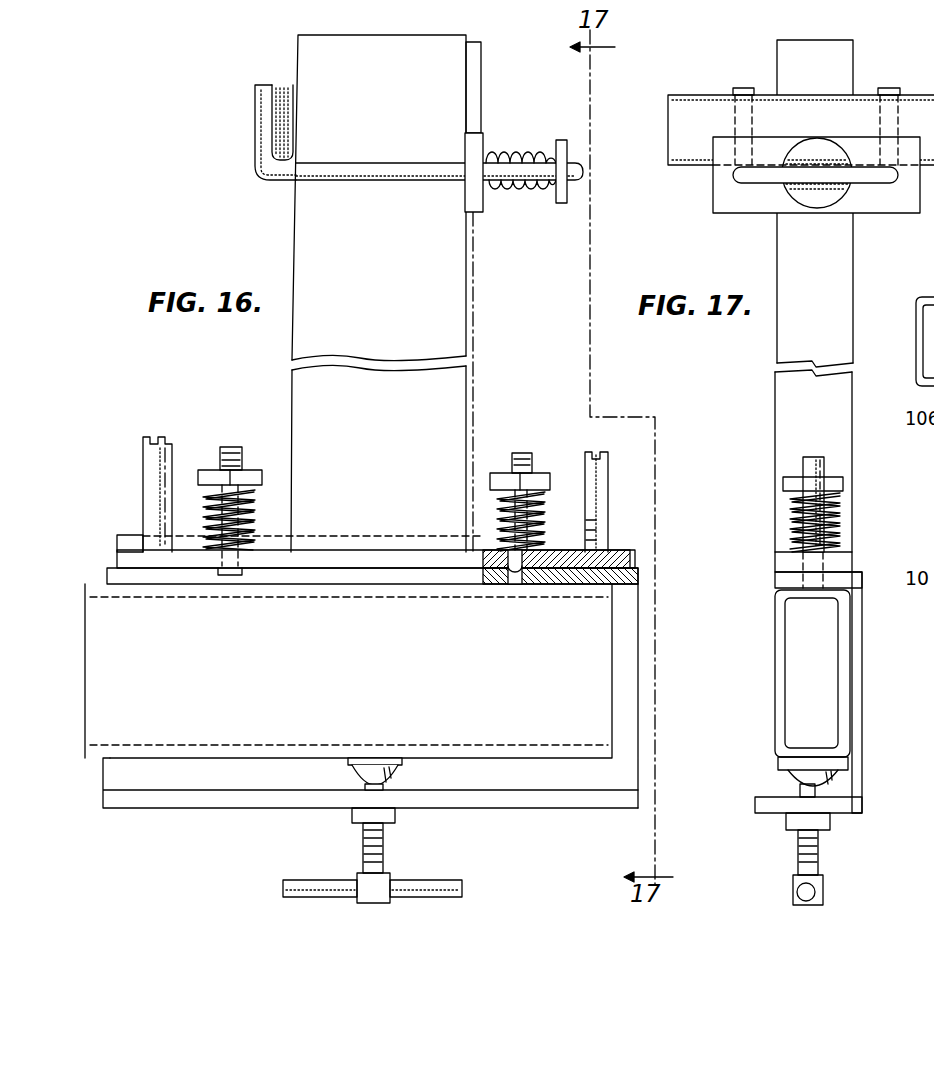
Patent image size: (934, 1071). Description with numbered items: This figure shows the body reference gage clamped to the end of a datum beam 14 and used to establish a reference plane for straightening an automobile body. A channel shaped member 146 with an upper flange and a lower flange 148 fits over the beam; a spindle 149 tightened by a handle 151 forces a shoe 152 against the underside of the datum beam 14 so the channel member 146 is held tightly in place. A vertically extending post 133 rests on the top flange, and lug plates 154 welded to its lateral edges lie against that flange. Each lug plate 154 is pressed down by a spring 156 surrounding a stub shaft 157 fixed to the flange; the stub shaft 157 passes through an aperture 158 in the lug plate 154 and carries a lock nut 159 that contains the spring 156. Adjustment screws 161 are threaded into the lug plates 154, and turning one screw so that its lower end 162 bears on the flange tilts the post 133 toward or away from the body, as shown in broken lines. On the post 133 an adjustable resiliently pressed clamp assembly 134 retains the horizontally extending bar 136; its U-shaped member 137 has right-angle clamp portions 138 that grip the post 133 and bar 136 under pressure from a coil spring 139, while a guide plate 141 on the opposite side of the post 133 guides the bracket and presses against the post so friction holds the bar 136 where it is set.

In FIG. 16, the datum beam 14 is at (616, 650).
In FIG. 17, the datum beam 14 is at (768, 688).
In FIG. 16, the vertically extending post 133 is at (483, 62).
In FIG. 17, the vertically extending post 133 is at (852, 70).
In FIG. 16, the adjustable resiliently pressed clamp assembly 134 is at (516, 139).
In FIG. 17, the adjustable resiliently pressed clamp assembly 134 is at (705, 192).
In FIG. 16, the horizontally extending bar 136 is at (287, 95).
In FIG. 17, the horizontally extending bar 136 is at (694, 106).
In FIG. 16, the U-shaped member 137 is at (582, 170).
In FIG. 17, the U-shaped member 137 is at (735, 181).
In FIG. 16, the right-angle clamp portions 138 is at (258, 123).
In FIG. 17, the right-angle clamp portions 138 is at (745, 91).
In FIG. 16, the coil spring 139 is at (528, 198).
In FIG. 16, the guide plate 141 is at (476, 213).
In FIG. 17, the guide plate 141 is at (747, 207).
In FIG. 16, the channel shaped member 146 is at (500, 787).
In FIG. 17, the channel shaped member 146 is at (858, 690).
In FIG. 17, the lower flange 148 is at (758, 805).
In FIG. 16, the spindle 149 is at (385, 845).
In FIG. 17, the spindle 149 is at (820, 852).
In FIG. 17, the handle 151 is at (822, 893).
In FIG. 16, the shoe 152 is at (405, 765).
In FIG. 17, the shoe 152 is at (840, 766).
In FIG. 16, the lug plates 154 is at (612, 551).
In FIG. 17, the lug plates 154 is at (778, 573).
In FIG. 16, the spring 156 is at (245, 537).
In FIG. 17, the spring 156 is at (788, 526).
In FIG. 16, the stub shaft 157 is at (229, 447).
In FIG. 16, the aperture 158 is at (505, 586).
In FIG. 16, the lock nut 159 is at (251, 469).
In FIG. 17, the lock nut 159 is at (783, 482).
In FIG. 16, the adjustment screws 161 is at (143, 468).
In FIG. 17, the adjustment screws 161 is at (806, 467).
In FIG. 16, the lower end 162 is at (595, 586).